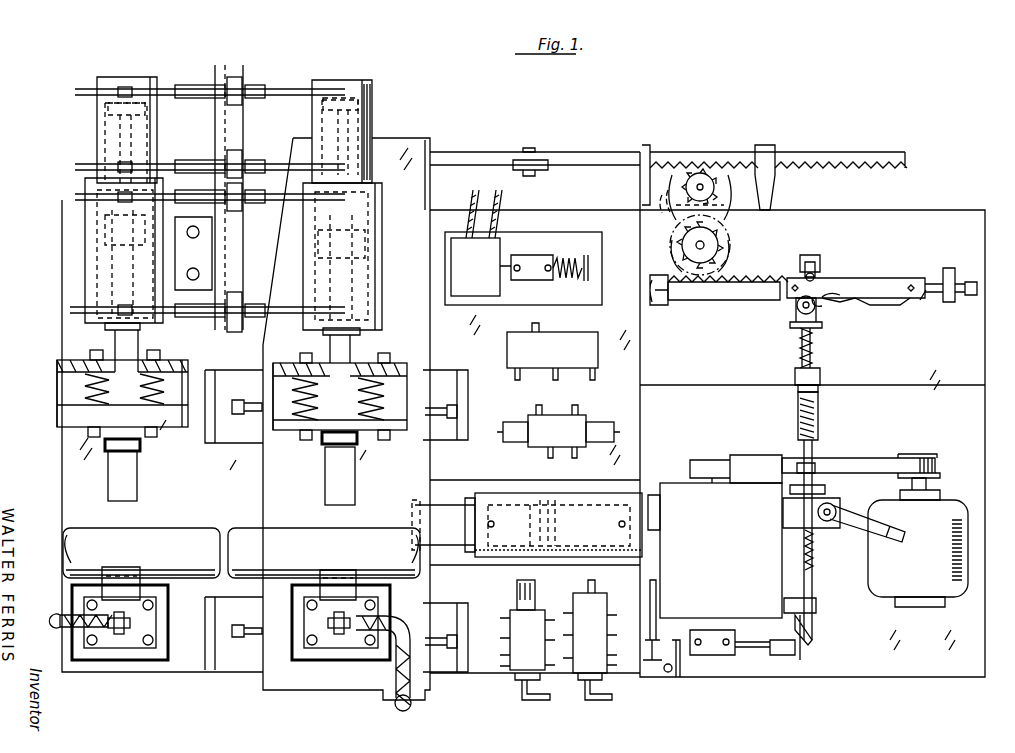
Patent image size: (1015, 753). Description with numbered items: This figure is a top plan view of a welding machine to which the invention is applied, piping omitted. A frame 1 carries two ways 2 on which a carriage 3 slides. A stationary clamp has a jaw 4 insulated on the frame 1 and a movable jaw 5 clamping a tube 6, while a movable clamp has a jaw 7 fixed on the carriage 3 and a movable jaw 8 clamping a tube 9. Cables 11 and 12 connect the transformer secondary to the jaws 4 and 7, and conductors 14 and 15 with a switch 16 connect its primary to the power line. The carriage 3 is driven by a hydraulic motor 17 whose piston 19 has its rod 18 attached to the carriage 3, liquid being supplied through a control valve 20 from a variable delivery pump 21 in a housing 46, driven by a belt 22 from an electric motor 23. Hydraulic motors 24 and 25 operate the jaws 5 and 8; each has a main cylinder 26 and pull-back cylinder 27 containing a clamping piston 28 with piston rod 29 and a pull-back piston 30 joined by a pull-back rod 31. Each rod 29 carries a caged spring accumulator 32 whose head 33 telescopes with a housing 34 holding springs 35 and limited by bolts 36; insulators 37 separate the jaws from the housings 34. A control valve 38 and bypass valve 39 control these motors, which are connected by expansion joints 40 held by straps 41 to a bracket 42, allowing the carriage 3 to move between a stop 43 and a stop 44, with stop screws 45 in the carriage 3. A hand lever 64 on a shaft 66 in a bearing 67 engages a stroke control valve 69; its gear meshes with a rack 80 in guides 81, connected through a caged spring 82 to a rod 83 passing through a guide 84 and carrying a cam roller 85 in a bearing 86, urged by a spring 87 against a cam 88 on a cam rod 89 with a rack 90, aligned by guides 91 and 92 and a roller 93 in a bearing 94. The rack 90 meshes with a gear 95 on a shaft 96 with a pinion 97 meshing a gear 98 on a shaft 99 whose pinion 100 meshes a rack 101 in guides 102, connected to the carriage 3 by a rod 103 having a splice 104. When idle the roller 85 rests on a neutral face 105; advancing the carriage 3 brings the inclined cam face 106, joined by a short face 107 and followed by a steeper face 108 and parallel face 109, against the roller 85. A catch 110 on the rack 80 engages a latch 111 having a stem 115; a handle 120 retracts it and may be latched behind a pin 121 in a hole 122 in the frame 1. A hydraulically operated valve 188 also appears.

The frame 1 is at (940, 677).
The ways 2 is at (258, 420).
The carriage 3 is at (282, 680).
The jaw 4 is at (148, 652).
The movable jaw 5 is at (122, 476).
The tube 6 is at (141, 553).
The jaw 7 is at (330, 640).
The movable jaw 8 is at (340, 476).
The tube 9 is at (324, 553).
The cable 11 is at (58, 615).
The cable 12 is at (395, 703).
The conductor 14 is at (472, 200).
The conductor 15 is at (500, 196).
The switch 16 is at (523, 268).
The hydraulic motor 17 is at (558, 525).
The rod 18 is at (455, 515).
The piston 19 is at (548, 495).
The control valve 20 is at (527, 640).
The variable delivery pump 21 is at (721, 550).
The belt 22 is at (880, 470).
The electric motor 23 is at (918, 542).
The hydraulic motor 24 is at (92, 268).
The hydraulic motor 25 is at (382, 276).
The main cylinder 26 is at (95, 235).
The pull-back cylinder 27 is at (97, 130).
The clamping piston 28 is at (100, 225).
The piston rod 29 is at (112, 338).
The pull-back piston 30 is at (106, 103).
The pull-back rod 31 is at (150, 128).
The caged spring accumulator 32 is at (57, 410).
The head 33 is at (172, 370).
The housing 34 is at (385, 430).
The springs 35 is at (85, 378).
The bolts 36 is at (88, 440).
The insulators 37 is at (105, 447).
The control valve 38 is at (590, 640).
The bypass valve 39 is at (558, 431).
The expansion joints 40 is at (200, 94).
The straps 41 is at (242, 84).
The bracket 42 is at (209, 197).
The stop 43 is at (212, 435).
The stop 44 is at (458, 372).
The stop screw 45 is at (252, 414).
The housing 46 is at (676, 483).
The hand lever 64 is at (860, 527).
The shaft 66 is at (836, 510).
The bearing 67 is at (811, 513).
The stroke control valve 69 is at (755, 458).
The rack 80 is at (813, 566).
The stationary guides 81 is at (825, 488).
The caged spring 82 is at (818, 420).
The rod 83 is at (818, 392).
The stationary guide 84 is at (820, 376).
The cam roller 85 is at (797, 306).
The bearing 86 is at (796, 328).
The helical compression spring 87 is at (800, 348).
The cam 88 is at (895, 278).
The cam rod 89 is at (972, 296).
The rack 90 is at (718, 298).
The stationary guide 91 is at (947, 270).
The stationary guide 92 is at (655, 305).
The roller 93 is at (815, 276).
The stationary bearing 94 is at (812, 255).
The gear 95 is at (732, 252).
The shaft 96 is at (706, 246).
The pinion 97 is at (700, 197).
The gear 98 is at (682, 207).
The shaft 99 is at (686, 187).
The pinion 100 is at (710, 188).
The rack 101 is at (905, 158).
The stationary guides 102 is at (650, 148).
The rod 103 is at (470, 160).
The joint 104 is at (528, 148).
The neutral face 105 is at (830, 294).
The inclined cam face 106 is at (835, 304).
The short inclined face 107 is at (850, 303).
The cam face 108 is at (860, 308).
The face 109 is at (910, 305).
The catch 110 is at (812, 632).
The latch 111 is at (712, 650).
The stem 115 is at (795, 650).
The handle 120 is at (690, 672).
The pin 121 is at (656, 600).
The hole 122 is at (666, 673).
The hydraulically operated valve 188 is at (552, 351).